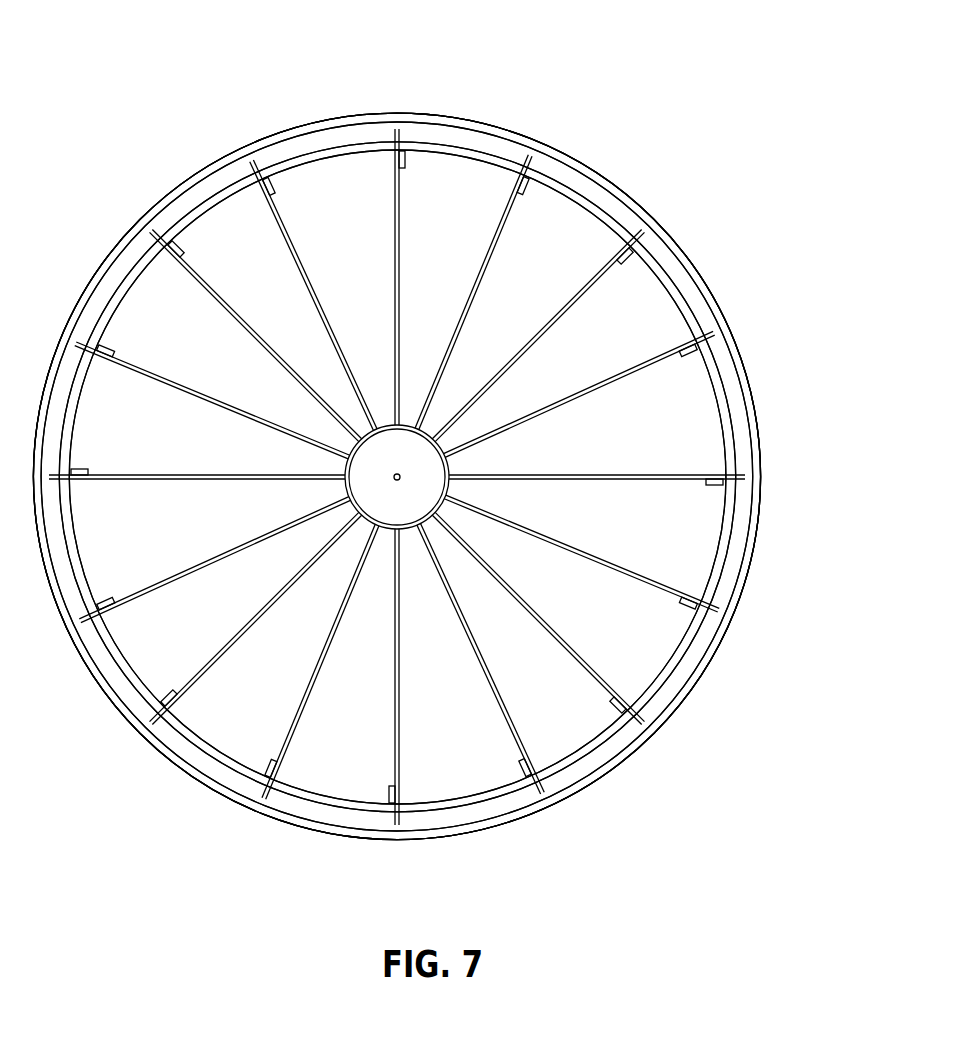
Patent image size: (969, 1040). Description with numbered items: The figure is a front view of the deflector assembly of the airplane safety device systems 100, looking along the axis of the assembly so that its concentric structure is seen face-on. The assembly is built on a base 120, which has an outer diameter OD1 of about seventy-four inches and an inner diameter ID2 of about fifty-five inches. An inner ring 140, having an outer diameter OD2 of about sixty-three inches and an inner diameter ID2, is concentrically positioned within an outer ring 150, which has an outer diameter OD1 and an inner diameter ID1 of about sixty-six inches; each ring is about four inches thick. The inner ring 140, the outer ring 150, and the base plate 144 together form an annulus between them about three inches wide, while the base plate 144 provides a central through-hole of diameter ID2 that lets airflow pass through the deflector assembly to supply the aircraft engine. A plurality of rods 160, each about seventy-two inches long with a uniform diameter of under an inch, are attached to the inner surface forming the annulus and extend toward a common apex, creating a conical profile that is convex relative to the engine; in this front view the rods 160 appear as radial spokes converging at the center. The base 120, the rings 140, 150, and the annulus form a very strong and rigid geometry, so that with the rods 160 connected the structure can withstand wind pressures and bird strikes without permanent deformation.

The airplane safety device systems 100 is at (723, 178).
The base 120 is at (603, 199).
The inner ring 140 is at (683, 665).
The base plate 144 is at (132, 730).
The outer ring 150 is at (641, 745).
The rods 160 is at (392, 740).
The inner diameter of outer ring ID1 is at (580, 786).
The outer diameter of outer ring OD1 is at (608, 778).
The inner diameter of inner ring ID2 is at (725, 551).
The outer diameter of inner ring OD2 is at (682, 651).